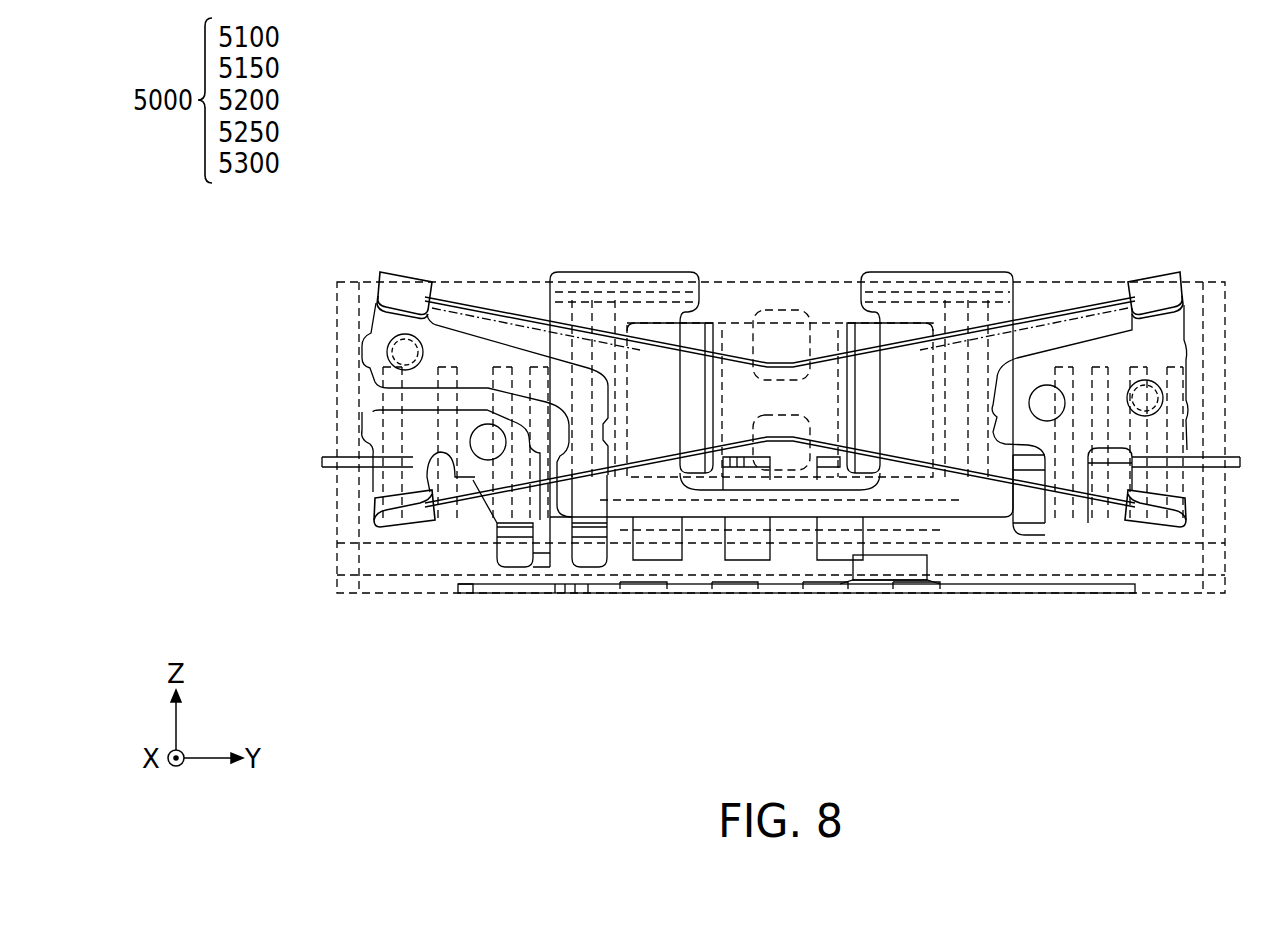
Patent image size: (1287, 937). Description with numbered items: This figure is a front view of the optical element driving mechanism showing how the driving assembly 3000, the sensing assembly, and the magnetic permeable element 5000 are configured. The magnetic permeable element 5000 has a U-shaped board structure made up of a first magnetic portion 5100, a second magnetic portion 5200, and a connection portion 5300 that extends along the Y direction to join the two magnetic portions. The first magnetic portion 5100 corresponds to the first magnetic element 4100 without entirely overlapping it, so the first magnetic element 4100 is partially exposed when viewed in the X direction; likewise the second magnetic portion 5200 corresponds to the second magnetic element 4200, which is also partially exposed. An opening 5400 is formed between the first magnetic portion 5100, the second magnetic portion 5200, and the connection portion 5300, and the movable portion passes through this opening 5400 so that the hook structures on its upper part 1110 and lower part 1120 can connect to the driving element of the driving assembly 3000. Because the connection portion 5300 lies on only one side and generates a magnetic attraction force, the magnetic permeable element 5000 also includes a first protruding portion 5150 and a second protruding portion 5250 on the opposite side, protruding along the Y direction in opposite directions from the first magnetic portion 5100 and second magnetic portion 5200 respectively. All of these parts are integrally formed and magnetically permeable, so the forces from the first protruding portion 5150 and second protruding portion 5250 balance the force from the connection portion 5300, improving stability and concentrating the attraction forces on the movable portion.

The magnetic permeable element 5000 is at (588, 272).
The first magnetic portion 5100 is at (918, 300).
The first protruding portion 5150 is at (866, 300).
The second magnetic portion 5200 is at (638, 300).
The second protruding portion 5250 is at (690, 300).
The connection portion 5300 is at (790, 510).
The opening 5400 is at (805, 475).
The upper part 1110 is at (783, 335).
The lower part 1120 is at (768, 455).
The driving assembly 3000 is at (1152, 285).
The first magnetic element 4100 is at (873, 418).
The second magnetic element 4200 is at (692, 418).